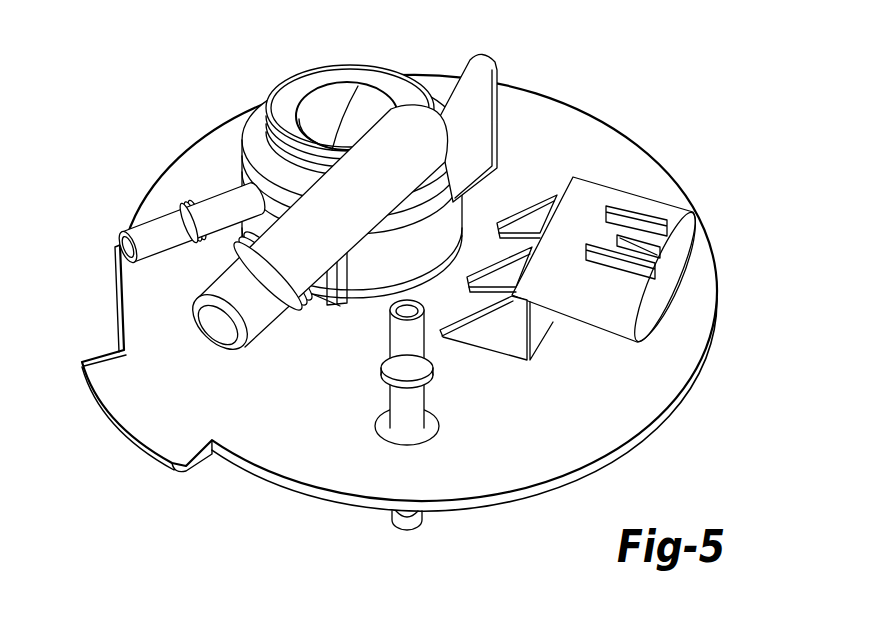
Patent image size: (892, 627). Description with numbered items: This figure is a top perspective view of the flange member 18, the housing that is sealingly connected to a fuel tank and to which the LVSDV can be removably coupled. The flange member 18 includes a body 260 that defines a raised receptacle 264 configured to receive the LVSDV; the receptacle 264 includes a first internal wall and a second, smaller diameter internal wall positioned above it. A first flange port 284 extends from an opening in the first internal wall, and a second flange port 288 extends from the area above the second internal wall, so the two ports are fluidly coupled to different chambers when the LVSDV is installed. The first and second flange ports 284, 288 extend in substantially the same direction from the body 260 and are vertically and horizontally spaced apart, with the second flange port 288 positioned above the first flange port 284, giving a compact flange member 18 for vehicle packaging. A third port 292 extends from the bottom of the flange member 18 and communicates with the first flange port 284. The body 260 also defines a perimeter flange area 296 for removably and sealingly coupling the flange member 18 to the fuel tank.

The flange member 18 is at (667, 122).
The body 260 is at (534, 445).
The receptacle 264 is at (362, 250).
The first flange port 284 is at (153, 233).
The second flange port 288 is at (221, 291).
The third port 292 is at (488, 113).
The perimeter flange area 296 is at (632, 442).